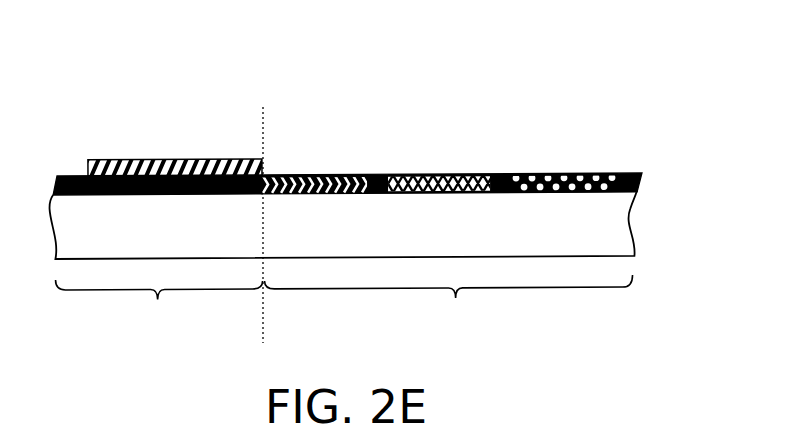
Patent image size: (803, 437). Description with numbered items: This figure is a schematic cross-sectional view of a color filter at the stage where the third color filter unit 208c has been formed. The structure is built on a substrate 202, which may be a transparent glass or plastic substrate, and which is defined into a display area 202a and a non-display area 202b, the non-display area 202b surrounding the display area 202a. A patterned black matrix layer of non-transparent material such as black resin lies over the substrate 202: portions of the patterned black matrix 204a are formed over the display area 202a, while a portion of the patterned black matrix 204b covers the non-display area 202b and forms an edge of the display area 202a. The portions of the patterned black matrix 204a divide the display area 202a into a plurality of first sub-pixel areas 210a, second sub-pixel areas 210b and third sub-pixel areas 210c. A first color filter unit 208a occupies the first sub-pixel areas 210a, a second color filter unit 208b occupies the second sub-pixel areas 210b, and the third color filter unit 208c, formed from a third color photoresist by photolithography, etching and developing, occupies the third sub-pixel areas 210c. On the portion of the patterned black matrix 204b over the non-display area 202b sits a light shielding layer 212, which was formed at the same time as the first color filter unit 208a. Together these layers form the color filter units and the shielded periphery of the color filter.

The substrate 202 is at (602, 220).
The display area 202a is at (449, 305).
The non-display area 202b is at (159, 309).
The portions of the patterned black matrix 204a is at (627, 173).
The portion of the patterned black matrix 204b is at (72, 176).
The first color filter unit 208a is at (465, 173).
The second color filter unit 208b is at (340, 173).
The third color filter unit 208c is at (578, 173).
The first sub-pixel areas 210a is at (407, 168).
The second sub-pixel areas 210b is at (283, 168).
The third sub-pixel areas 210c is at (532, 168).
The light shielding layer 212 is at (173, 160).